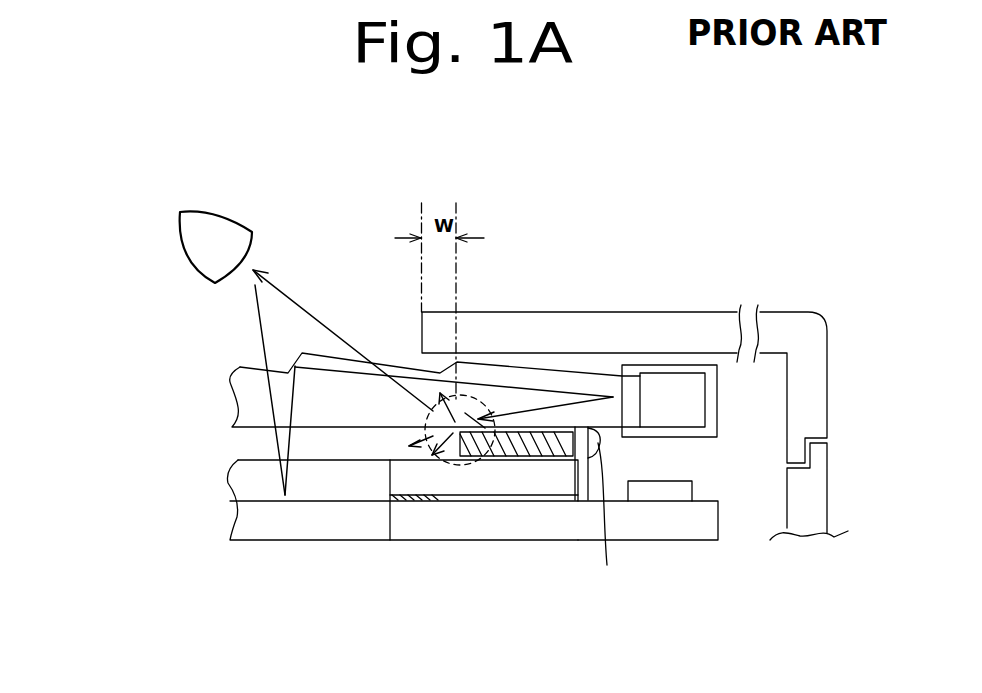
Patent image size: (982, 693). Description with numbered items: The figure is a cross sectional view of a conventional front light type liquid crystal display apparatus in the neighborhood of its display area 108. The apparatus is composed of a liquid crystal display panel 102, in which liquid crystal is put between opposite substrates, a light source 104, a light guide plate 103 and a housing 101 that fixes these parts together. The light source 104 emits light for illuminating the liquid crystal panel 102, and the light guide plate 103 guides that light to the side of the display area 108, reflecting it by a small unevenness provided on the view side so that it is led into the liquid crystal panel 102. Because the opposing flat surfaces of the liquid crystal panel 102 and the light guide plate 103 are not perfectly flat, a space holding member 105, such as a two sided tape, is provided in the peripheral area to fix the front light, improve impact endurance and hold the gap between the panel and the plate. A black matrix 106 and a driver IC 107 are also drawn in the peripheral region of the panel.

The housing 101 is at (605, 333).
The liquid crystal display panel 102 is at (223, 540).
The light guide plate 103 is at (537, 377).
The light source 104 is at (670, 397).
The space holding member 105 is at (585, 523).
The black matrix 106 is at (468, 498).
The driver IC 107 is at (660, 492).
The display area 108 is at (390, 549).